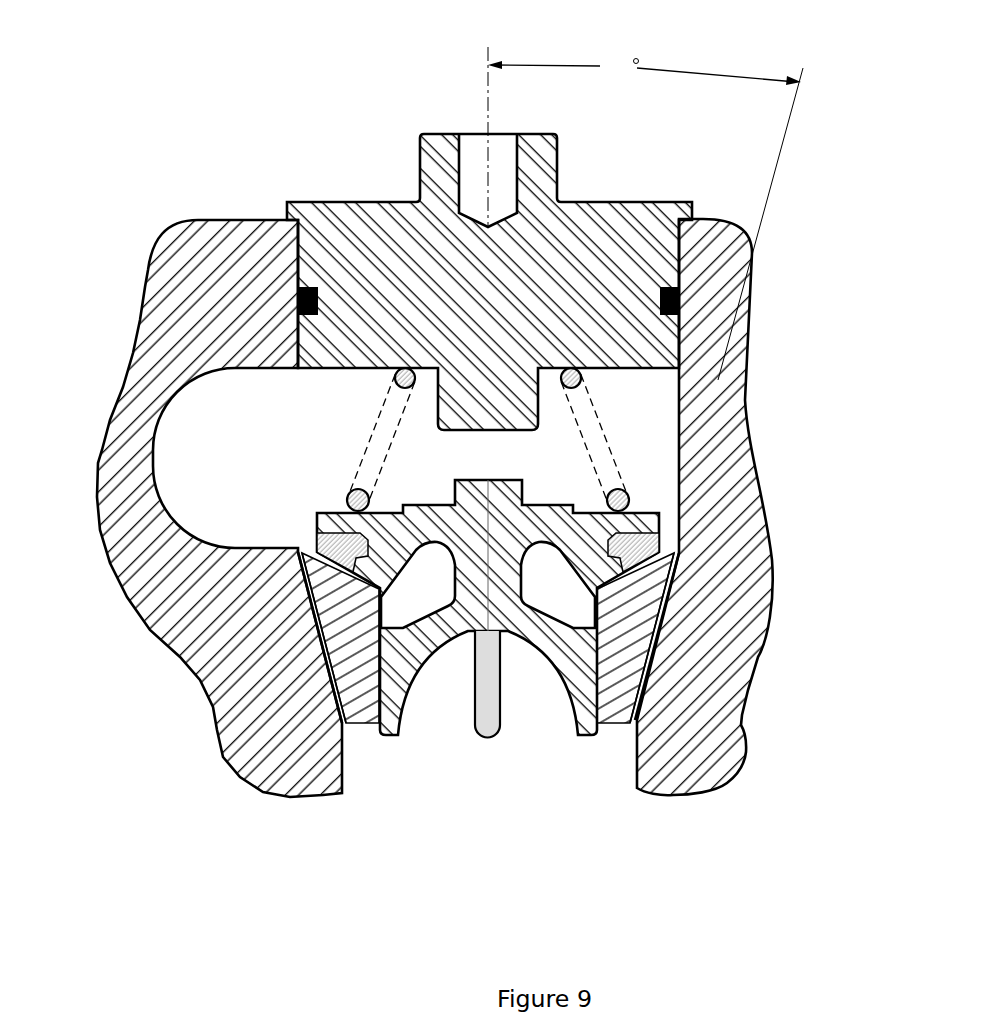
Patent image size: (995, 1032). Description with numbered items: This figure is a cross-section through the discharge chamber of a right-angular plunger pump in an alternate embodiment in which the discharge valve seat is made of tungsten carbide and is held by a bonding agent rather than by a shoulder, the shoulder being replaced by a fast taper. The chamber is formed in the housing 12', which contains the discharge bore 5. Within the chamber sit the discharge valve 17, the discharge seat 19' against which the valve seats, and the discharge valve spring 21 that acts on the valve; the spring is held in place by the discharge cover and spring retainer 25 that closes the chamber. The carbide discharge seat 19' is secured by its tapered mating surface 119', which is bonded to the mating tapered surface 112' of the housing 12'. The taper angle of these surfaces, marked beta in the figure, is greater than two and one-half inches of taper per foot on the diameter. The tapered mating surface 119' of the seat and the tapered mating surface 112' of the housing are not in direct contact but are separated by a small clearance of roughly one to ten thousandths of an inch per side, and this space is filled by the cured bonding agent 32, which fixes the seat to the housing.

The discharge bore 5 is at (541, 811).
The housing 12' is at (468, 471).
The discharge seat 19' is at (746, 507).
The discharge cover and spring retainer 25 is at (381, 198).
The discharge valve spring 21 is at (643, 512).
The discharge valve 17 is at (603, 433).
The tapered mating surface of housing 112' is at (580, 630).
The tapered mating surface of discharge seat 119' is at (572, 638).
The cured bonding agent 32 is at (661, 621).